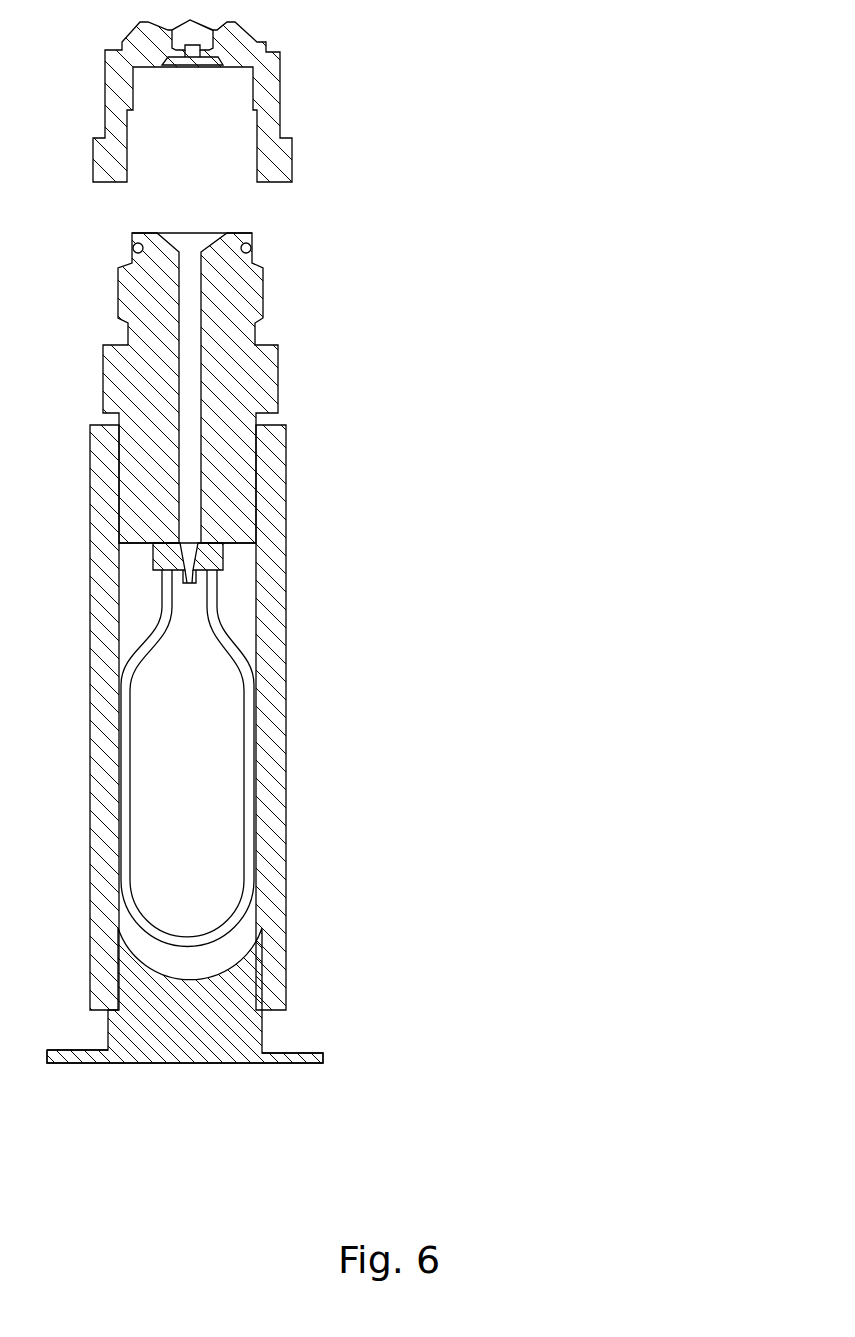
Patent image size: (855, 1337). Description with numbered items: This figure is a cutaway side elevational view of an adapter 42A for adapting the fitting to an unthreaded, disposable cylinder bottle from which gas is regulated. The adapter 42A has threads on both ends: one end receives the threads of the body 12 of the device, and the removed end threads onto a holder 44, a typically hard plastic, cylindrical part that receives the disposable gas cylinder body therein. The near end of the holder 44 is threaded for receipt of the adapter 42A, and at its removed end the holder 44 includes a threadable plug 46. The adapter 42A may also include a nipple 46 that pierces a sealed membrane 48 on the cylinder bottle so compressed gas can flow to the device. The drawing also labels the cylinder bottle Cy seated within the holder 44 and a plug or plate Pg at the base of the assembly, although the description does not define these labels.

The body 12 is at (288, 93).
The adapter 42A is at (280, 270).
The holder 44 is at (303, 783).
The threadable plug 46 is at (205, 545).
The sealed membrane 48 is at (223, 559).
The cylinder (bottle) Cy is at (217, 617).
The plate Pg is at (262, 1043).